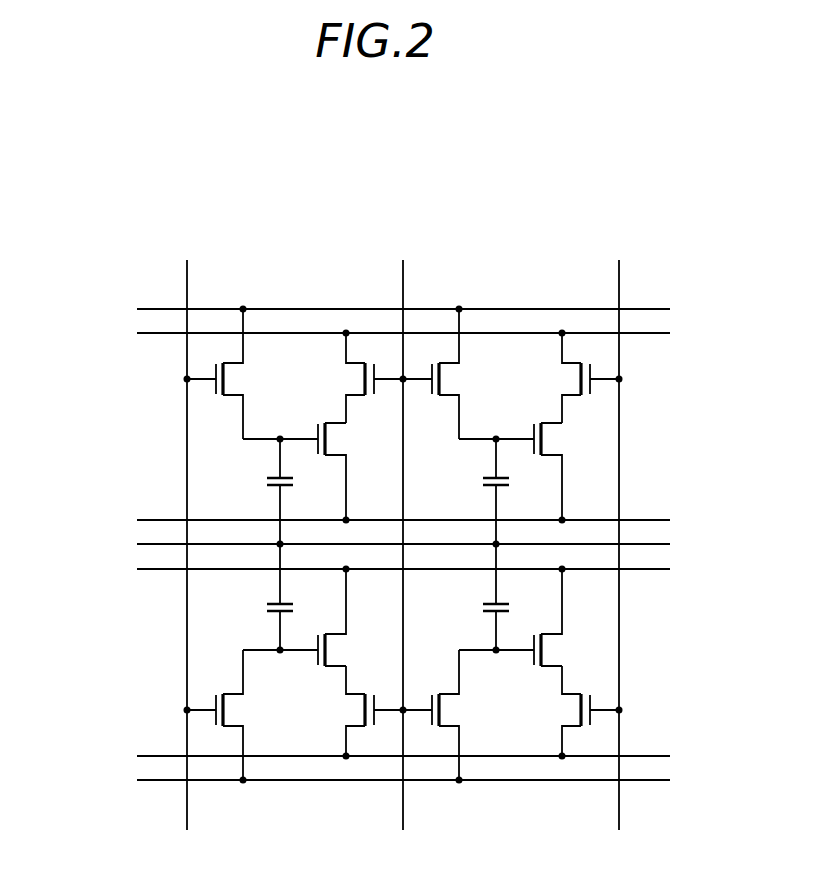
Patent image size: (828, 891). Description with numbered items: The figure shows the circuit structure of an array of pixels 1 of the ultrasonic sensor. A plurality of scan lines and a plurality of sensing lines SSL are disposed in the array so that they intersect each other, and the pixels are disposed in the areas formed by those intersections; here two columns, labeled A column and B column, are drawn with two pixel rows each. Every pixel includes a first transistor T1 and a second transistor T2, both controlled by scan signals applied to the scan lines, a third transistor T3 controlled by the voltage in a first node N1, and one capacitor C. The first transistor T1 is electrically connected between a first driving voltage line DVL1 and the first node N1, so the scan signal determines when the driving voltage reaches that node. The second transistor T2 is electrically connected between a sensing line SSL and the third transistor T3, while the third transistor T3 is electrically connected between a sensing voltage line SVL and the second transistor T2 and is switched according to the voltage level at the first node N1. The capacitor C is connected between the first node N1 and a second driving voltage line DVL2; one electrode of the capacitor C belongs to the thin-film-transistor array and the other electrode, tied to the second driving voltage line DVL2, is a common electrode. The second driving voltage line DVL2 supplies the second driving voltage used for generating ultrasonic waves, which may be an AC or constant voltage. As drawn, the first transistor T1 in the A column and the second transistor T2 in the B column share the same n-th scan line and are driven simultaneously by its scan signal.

The array of pixels 1 is at (240, 175).
The first transistor T1 is at (333, 544).
The second transistor T2 is at (474, 544).
The third transistor T3 is at (447, 544).
The capacitor C is at (395, 544).
The first node N1 is at (388, 546).
The first driving voltage line DVL1 is at (137, 309).
The second driving voltage line DVL2 is at (137, 544).
The sensing line SSL is at (137, 333).
The sensing voltage line SVL is at (137, 520).